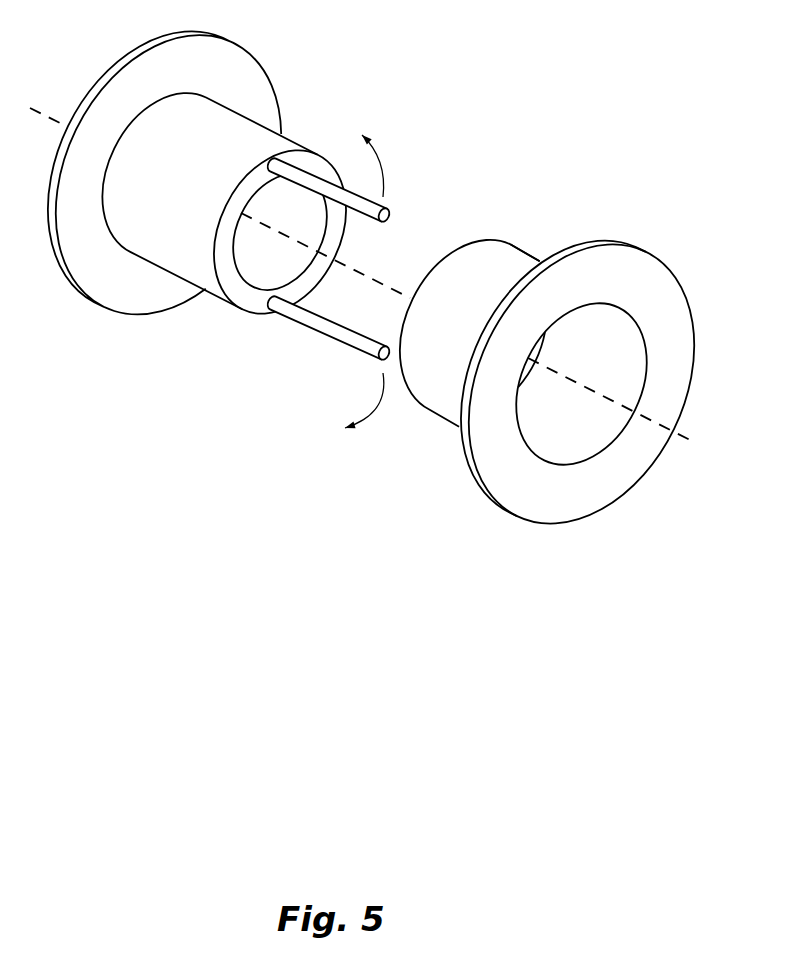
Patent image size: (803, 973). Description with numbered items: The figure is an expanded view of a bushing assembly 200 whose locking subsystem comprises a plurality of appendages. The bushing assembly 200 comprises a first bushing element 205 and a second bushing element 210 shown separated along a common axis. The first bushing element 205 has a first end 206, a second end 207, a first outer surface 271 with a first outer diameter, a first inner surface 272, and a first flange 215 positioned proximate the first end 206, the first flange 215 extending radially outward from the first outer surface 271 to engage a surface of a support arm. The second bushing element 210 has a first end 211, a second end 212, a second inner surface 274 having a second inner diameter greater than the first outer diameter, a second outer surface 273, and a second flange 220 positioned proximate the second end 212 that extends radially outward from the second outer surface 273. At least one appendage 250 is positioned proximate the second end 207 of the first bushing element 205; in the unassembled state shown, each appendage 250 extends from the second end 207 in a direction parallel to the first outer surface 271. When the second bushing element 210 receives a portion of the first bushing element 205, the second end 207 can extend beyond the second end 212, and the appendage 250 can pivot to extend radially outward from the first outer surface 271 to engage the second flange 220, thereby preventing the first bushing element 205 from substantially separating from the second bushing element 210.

The bushing assembly 200 is at (532, 58).
The first bushing element 205 is at (159, 382).
The first end 206 is at (185, 101).
The second end 207 is at (220, 268).
The first flange 215 is at (197, 58).
The appendage 250 is at (353, 332).
The first outer surface 271 is at (218, 155).
The first inner surface 272 is at (278, 275).
The second bushing element 210 is at (425, 484).
The first end 211 is at (475, 235).
The second outer surface 273 is at (512, 260).
The second flange 220 is at (575, 270).
The second end 212 is at (630, 312).
The second inner surface 274 is at (575, 445).